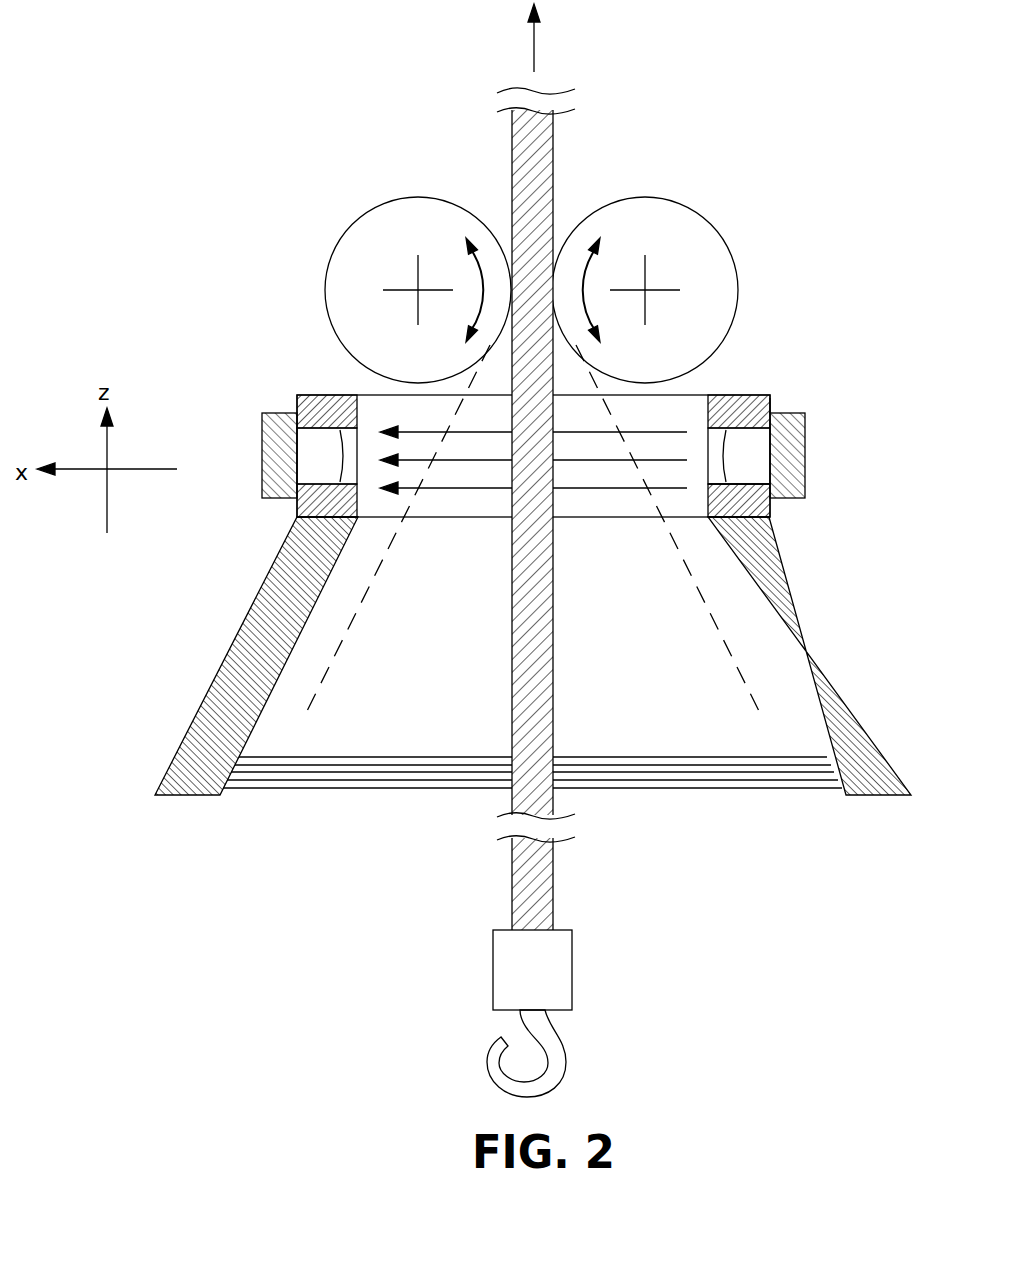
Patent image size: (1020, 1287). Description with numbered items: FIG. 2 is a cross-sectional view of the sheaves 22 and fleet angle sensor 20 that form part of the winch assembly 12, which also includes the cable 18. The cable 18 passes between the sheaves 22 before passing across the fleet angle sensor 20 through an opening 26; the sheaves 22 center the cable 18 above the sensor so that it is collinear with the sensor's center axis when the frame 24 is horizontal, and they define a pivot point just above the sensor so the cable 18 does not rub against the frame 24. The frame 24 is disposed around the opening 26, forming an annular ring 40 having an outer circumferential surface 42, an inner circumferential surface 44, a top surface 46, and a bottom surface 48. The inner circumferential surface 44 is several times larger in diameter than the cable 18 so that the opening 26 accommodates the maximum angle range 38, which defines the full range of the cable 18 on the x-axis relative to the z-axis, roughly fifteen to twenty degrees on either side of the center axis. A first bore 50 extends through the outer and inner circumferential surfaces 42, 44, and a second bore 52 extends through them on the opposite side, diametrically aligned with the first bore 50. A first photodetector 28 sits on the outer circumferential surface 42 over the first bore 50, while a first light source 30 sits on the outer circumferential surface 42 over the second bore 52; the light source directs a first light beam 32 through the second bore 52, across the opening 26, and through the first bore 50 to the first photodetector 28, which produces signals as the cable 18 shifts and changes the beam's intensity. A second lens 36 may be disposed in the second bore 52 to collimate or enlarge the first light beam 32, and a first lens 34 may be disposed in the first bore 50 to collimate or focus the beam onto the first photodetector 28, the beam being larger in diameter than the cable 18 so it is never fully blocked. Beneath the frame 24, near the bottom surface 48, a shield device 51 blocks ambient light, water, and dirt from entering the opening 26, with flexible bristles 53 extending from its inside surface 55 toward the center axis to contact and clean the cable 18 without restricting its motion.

The winch assembly 12 is at (758, 69).
The cable 18 is at (563, 722).
The fleet angle sensor 20 is at (820, 526).
The sheaves 22 is at (340, 240).
The frame 24 is at (330, 405).
The opening 26 is at (363, 381).
The first photodetector 28 is at (278, 440).
The first light source 30 is at (787, 443).
The first light beam 32 is at (435, 517).
The first lens 34 is at (318, 449).
The second lens 36 is at (750, 475).
The maximum angle range 38 is at (317, 692).
The annular ring 40 is at (772, 400).
The outer circumferential surface 42 is at (296, 512).
The inner circumferential surface 44 is at (660, 410).
The top surface 46 is at (740, 394).
The bottom surface 48 is at (350, 517).
The first bore 50 is at (315, 400).
The shield device 51 is at (872, 673).
The second bore 52 is at (703, 478).
The bristles 53 is at (345, 795).
The inside surface 55 is at (818, 740).